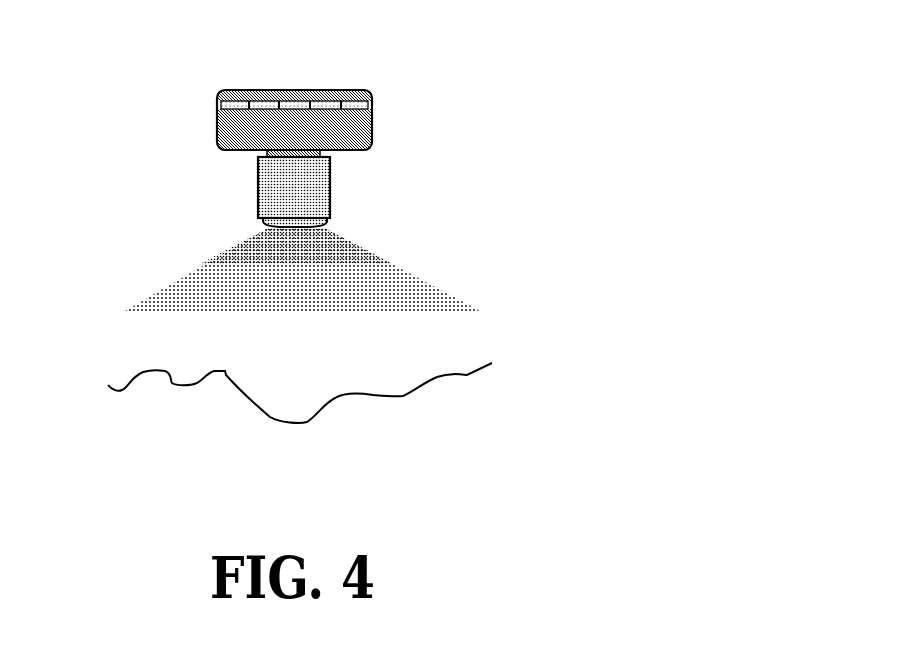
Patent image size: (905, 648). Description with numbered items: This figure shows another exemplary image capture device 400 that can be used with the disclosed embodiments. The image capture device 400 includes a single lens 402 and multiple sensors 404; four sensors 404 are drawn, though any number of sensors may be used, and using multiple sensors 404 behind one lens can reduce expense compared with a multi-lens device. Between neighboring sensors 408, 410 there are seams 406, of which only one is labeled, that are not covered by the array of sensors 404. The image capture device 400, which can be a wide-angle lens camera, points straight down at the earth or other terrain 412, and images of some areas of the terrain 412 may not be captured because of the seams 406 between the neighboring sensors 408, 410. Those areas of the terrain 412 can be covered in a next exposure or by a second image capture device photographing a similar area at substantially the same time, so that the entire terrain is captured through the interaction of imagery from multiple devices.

The image capture device 400 is at (323, 175).
The single lens 402 is at (328, 224).
The sensors 404 is at (243, 99).
The seams 406 is at (348, 93).
The neighboring sensor 408 is at (372, 118).
The neighboring sensor 410 is at (325, 100).
The terrain 412 is at (467, 375).